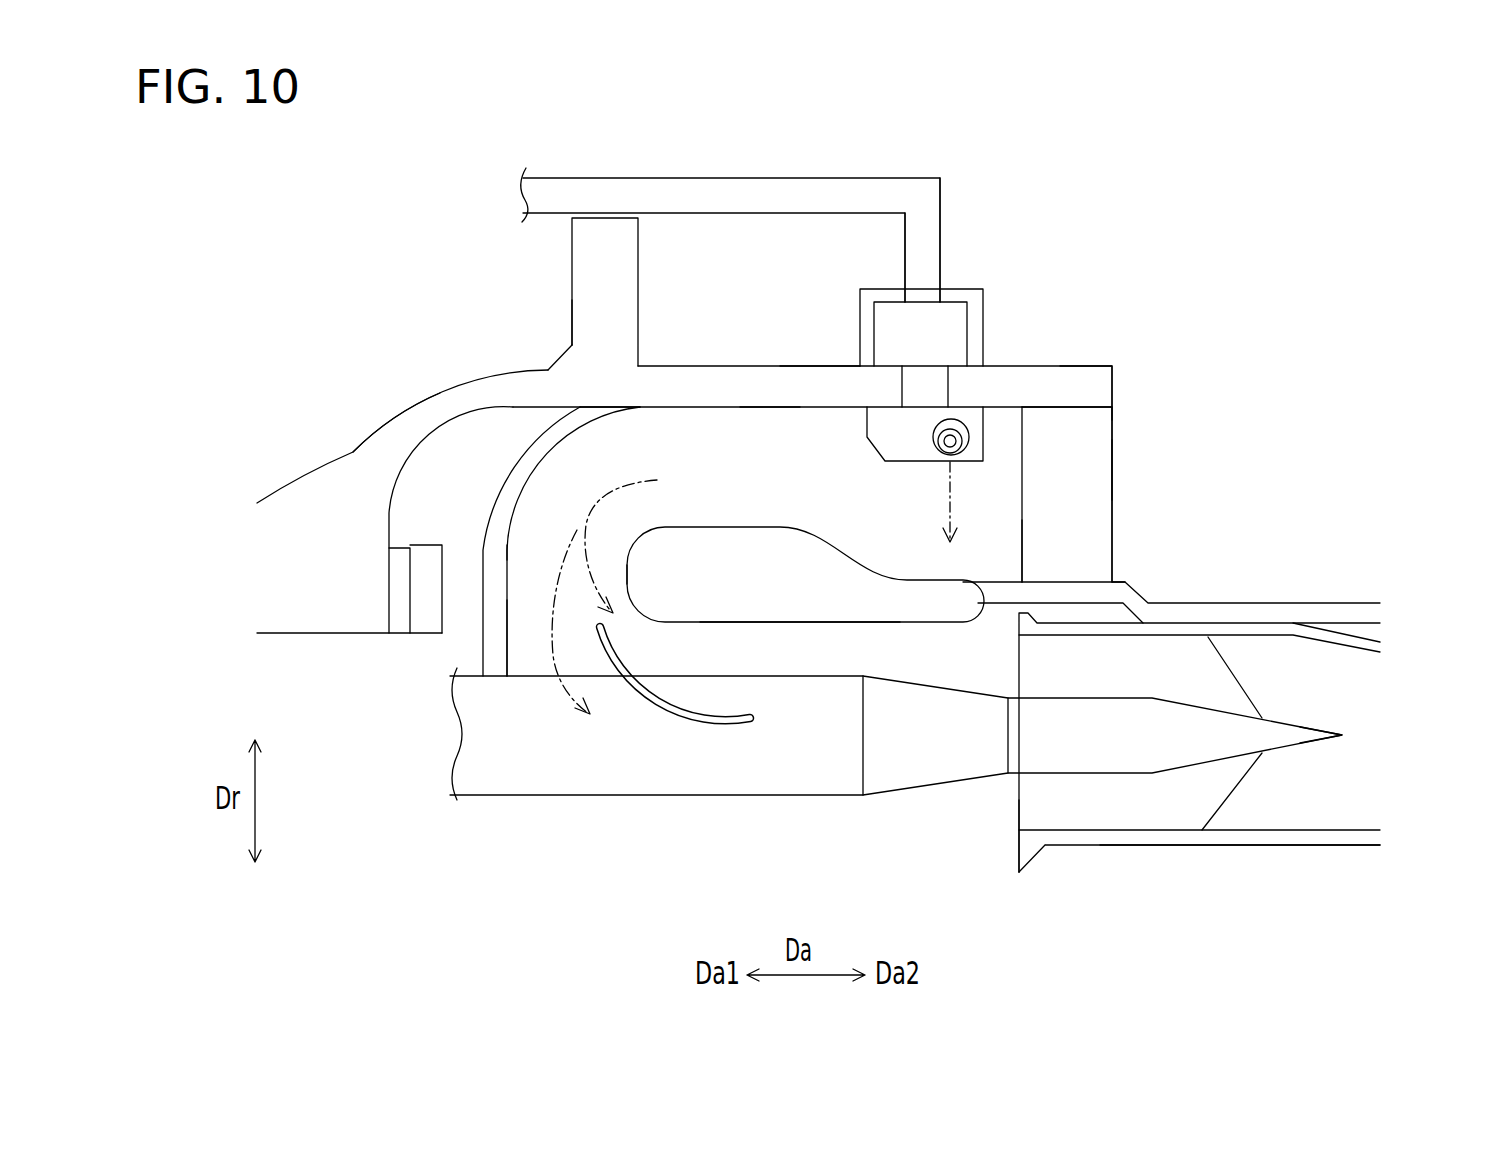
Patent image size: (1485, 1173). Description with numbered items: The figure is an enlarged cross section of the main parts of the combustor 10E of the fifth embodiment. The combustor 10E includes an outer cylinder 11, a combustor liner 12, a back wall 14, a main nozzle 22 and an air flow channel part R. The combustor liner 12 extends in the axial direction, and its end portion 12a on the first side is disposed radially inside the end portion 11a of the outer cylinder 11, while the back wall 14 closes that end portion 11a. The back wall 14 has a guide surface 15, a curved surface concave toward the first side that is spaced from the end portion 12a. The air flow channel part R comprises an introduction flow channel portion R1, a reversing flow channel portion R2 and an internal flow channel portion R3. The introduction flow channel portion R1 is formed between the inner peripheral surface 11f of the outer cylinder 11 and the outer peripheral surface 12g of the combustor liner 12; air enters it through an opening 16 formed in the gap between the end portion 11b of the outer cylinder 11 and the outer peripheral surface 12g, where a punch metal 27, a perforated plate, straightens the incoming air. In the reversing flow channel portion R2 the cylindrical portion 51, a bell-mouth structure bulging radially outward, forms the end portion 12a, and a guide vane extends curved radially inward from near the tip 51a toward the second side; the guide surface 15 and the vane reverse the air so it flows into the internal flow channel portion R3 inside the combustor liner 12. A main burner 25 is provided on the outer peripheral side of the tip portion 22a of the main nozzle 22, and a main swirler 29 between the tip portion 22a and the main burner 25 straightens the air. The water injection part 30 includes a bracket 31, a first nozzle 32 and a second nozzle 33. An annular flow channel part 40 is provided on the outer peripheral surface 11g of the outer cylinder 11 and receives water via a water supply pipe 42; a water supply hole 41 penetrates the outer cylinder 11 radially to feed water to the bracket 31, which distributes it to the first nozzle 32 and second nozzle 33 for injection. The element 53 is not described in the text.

The combustor 10E is at (412, 300).
The outer cylinder 11 is at (763, 418).
The end portion of the outer cylinder 11a is at (650, 363).
The end portion of the outer cylinder 11b is at (1112, 366).
The inner peripheral surface of the outer cylinder 11f is at (770, 420).
The outer peripheral surface of the outer cylinder 11g is at (825, 363).
The combustor liner 12 is at (1290, 604).
The end portion of the combustor liner 12a is at (533, 540).
The outer peripheral surface of the combustor liner 12g is at (1127, 580).
The back wall 14 is at (495, 505).
The guide surface 15 is at (528, 493).
The opening 16 is at (1095, 425).
The main nozzle 22 is at (817, 795).
The tip portion of the main nozzle 22a is at (1342, 735).
The main burner 25 is at (1280, 848).
The punch metal 27 is at (1112, 462).
The main swirler 29 is at (1218, 802).
The water injection part 30 is at (848, 485).
The bracket 31 is at (872, 460).
The first nozzle 32 is at (971, 409).
The second nozzle 33 is at (962, 412).
The annular flow channel part 40 is at (967, 332).
The water supply hole 41 is at (958, 420).
The water supply pipe 42 is at (858, 178).
The cylindrical portion 51 is at (805, 623).
The tip of the cylindrical portion 51a is at (627, 567).
The curved blade 53 is at (657, 698).
The air flow channel part R is at (714, 470).
The introduction flow channel portion R1 is at (1000, 493).
The reversing flow channel portion R2 is at (533, 558).
The internal flow channel portion R3 is at (960, 847).